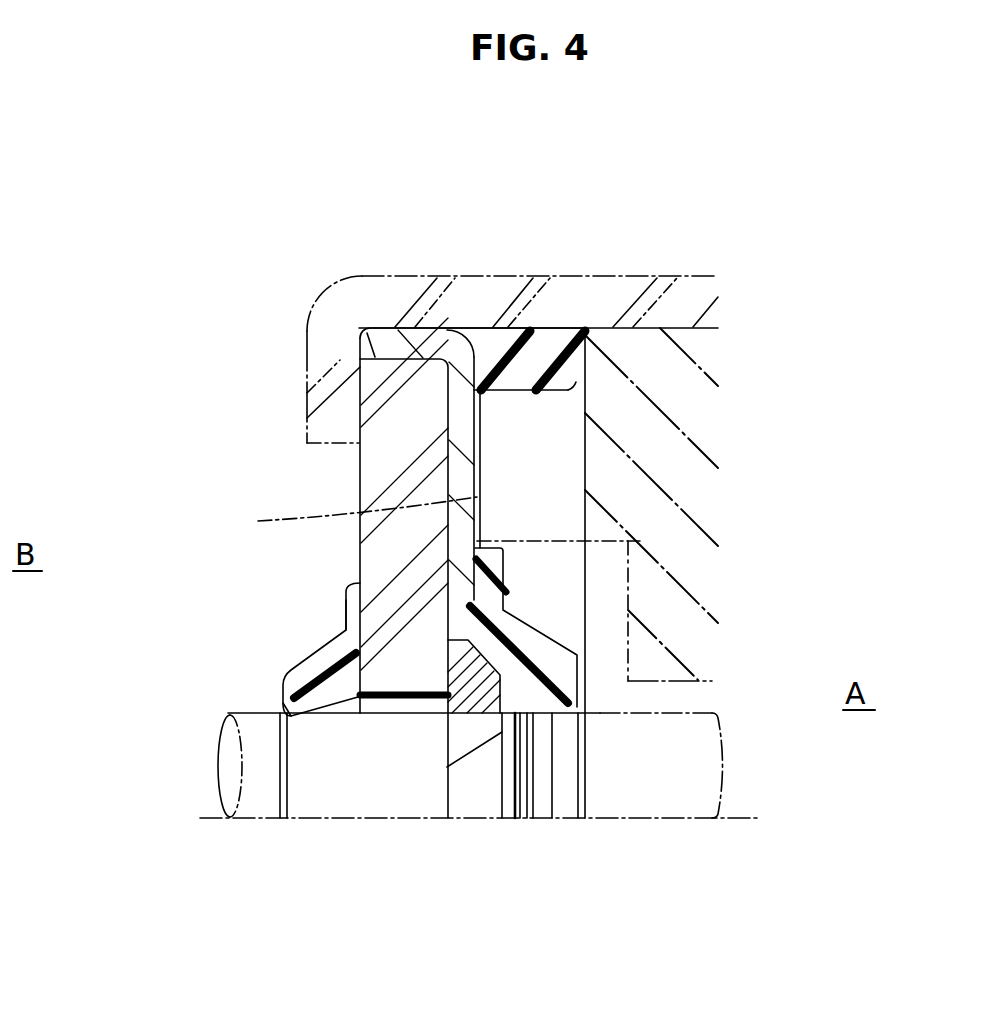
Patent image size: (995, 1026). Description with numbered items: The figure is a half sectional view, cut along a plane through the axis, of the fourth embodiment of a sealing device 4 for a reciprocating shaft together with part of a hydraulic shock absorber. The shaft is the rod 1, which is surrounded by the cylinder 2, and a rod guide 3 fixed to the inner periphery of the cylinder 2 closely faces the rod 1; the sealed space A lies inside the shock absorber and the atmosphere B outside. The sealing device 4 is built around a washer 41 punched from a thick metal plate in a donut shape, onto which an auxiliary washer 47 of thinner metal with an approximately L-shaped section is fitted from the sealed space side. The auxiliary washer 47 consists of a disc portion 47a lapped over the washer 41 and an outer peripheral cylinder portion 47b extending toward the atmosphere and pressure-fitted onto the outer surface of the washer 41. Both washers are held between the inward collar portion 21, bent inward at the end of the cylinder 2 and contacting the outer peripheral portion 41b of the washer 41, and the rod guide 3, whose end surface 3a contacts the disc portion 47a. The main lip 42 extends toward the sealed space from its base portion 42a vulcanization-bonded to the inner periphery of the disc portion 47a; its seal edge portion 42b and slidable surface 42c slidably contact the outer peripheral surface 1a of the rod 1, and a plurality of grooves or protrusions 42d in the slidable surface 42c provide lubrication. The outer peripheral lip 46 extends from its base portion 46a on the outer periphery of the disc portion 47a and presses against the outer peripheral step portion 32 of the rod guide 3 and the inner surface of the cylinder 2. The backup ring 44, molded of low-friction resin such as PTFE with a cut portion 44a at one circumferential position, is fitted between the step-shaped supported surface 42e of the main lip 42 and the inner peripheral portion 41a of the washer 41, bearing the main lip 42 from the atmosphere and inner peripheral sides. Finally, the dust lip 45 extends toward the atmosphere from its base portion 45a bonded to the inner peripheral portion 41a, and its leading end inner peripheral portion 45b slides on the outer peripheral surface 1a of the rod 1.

The rod 1 is at (230, 753).
The outer peripheral surface of the rod 1a is at (284, 668).
The cylinder 2 is at (636, 291).
The rod guide 3 is at (644, 389).
The end surface of the rod guide 3a is at (427, 519).
The sealing device 4 is at (264, 475).
The inward collar portion 21 is at (322, 377).
The outer peripheral step portion 32 is at (557, 336).
The washer 41 is at (397, 446).
The inner peripheral portion of the washer 41a is at (400, 672).
The outer peripheral portion of the washer 41b is at (380, 378).
The main lip 42 is at (545, 642).
The base portion of the main lip 42a is at (490, 603).
The seal edge portion 42b is at (540, 720).
The slidable surface 42c is at (542, 807).
The grooves or protrusions 42d is at (523, 817).
The step-shaped supported surface 42e is at (400, 673).
The backup ring 44 is at (448, 698).
The cut portion 44a is at (477, 735).
The dust lip 45 is at (289, 683).
The base portion of the dust lip 45a is at (342, 660).
The leading end inner peripheral portion 45b is at (298, 713).
The outer peripheral lip 46 is at (532, 372).
The base portion of the outer peripheral lip 46a is at (488, 355).
The auxiliary washer 47 is at (470, 473).
The disc portion 47a is at (477, 519).
The outer peripheral cylinder portion 47b is at (428, 358).